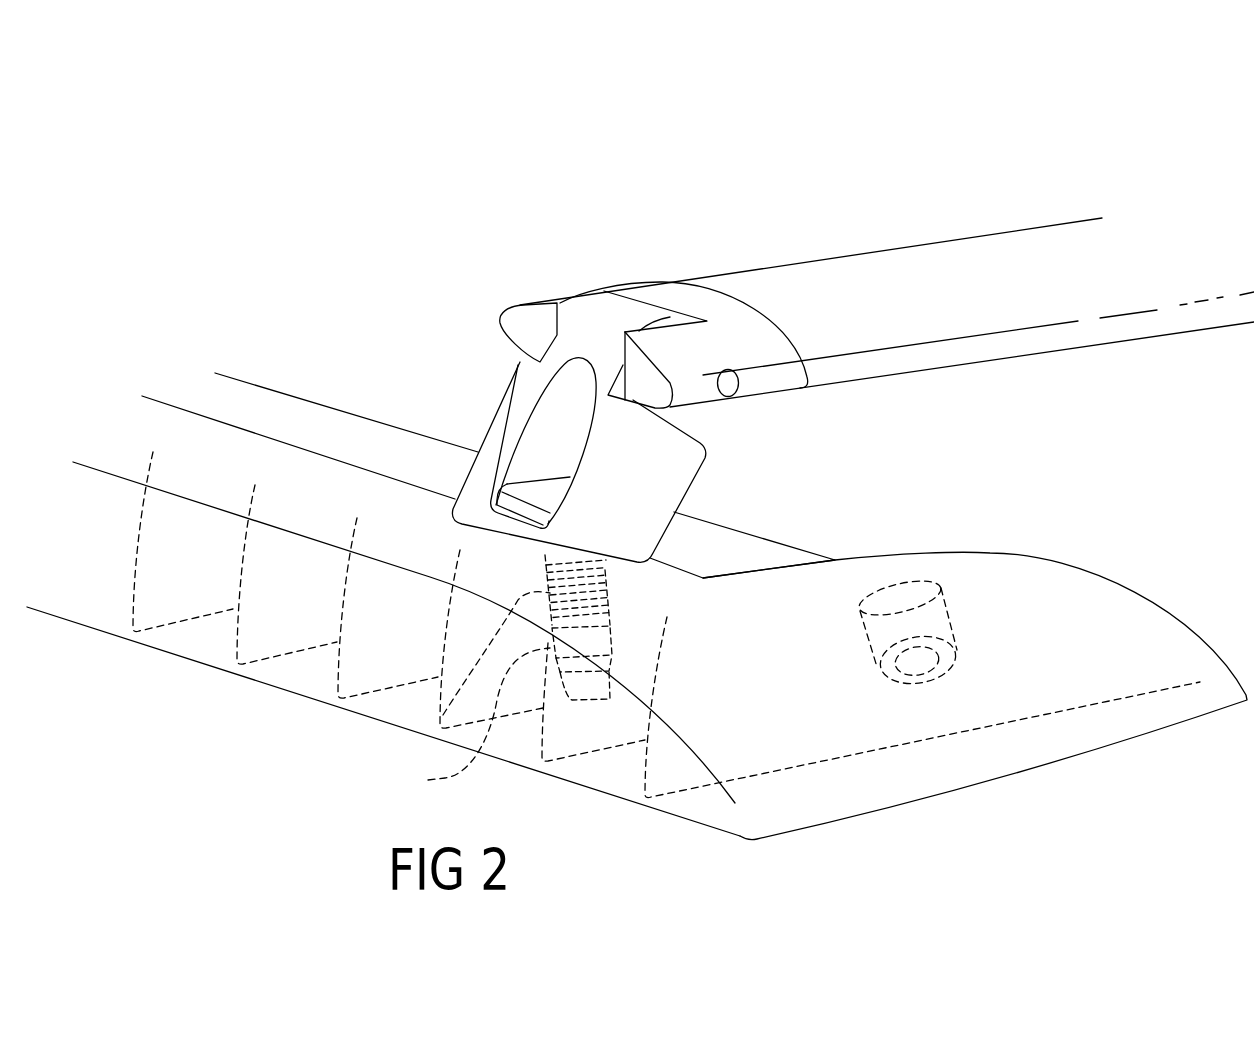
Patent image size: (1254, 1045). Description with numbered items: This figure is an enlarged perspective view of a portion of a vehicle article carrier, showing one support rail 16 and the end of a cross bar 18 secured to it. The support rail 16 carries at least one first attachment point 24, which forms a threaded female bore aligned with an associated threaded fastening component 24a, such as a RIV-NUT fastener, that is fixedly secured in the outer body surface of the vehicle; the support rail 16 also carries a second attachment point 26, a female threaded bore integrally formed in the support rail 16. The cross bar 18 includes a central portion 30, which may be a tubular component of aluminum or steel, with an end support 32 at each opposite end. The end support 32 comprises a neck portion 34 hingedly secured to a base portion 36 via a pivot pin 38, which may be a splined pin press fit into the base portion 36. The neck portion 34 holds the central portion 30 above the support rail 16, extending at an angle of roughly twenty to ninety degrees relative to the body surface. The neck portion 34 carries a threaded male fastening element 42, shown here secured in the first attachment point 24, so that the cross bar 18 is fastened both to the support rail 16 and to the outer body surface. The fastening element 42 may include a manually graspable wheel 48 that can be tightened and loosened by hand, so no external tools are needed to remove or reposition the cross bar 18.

The support rail 16 is at (617, 800).
The cross bar 18 is at (948, 232).
The first attachment point 24 is at (440, 735).
The threaded fastening component 24a is at (467, 694).
The second attachment point 26 is at (917, 655).
The central portion 30 is at (1050, 240).
The end support 32 is at (477, 320).
The neck portion 34 is at (692, 450).
The base portion 36 is at (667, 287).
The pivot pin 38 is at (732, 386).
The threaded male fastening element 42 is at (508, 481).
The manually graspable wheel 48 is at (547, 488).